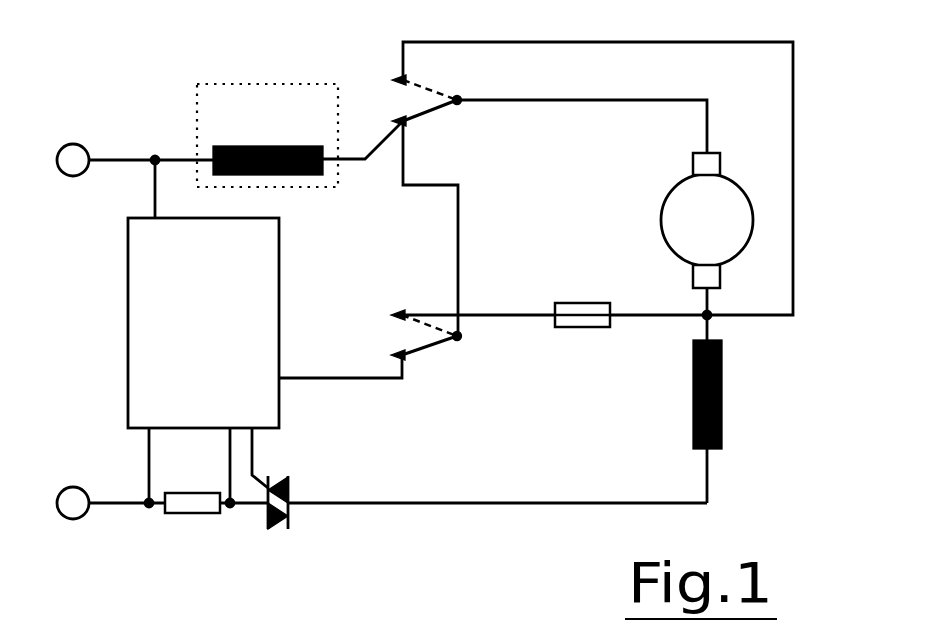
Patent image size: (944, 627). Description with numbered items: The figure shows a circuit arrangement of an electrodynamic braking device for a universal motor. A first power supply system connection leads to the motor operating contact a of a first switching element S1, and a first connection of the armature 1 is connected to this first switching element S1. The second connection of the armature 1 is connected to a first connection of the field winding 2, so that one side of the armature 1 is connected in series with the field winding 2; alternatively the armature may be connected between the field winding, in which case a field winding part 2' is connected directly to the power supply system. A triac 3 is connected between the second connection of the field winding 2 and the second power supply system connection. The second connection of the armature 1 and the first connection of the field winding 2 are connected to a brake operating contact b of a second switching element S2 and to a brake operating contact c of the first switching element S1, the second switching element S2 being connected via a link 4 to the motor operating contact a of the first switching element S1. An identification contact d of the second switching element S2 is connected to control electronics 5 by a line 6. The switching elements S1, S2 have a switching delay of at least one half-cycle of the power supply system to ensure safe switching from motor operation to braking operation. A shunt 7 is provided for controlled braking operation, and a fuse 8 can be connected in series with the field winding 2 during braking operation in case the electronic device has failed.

The armature 1 is at (662, 205).
The field winding 2 is at (683, 394).
The field winding part 2' is at (267, 135).
The triac 3 is at (273, 523).
The link 4 is at (402, 173).
The control electronics 5 is at (214, 336).
The line 6 is at (330, 380).
The shunt 7 is at (183, 515).
The fuse 8 is at (580, 302).
The first switching element S1 is at (462, 103).
The second switching element S2 is at (460, 340).
The motor operating contact a is at (410, 125).
The brake operating contact b is at (407, 310).
The brake operating contact c is at (408, 78).
The identification contact d is at (407, 358).